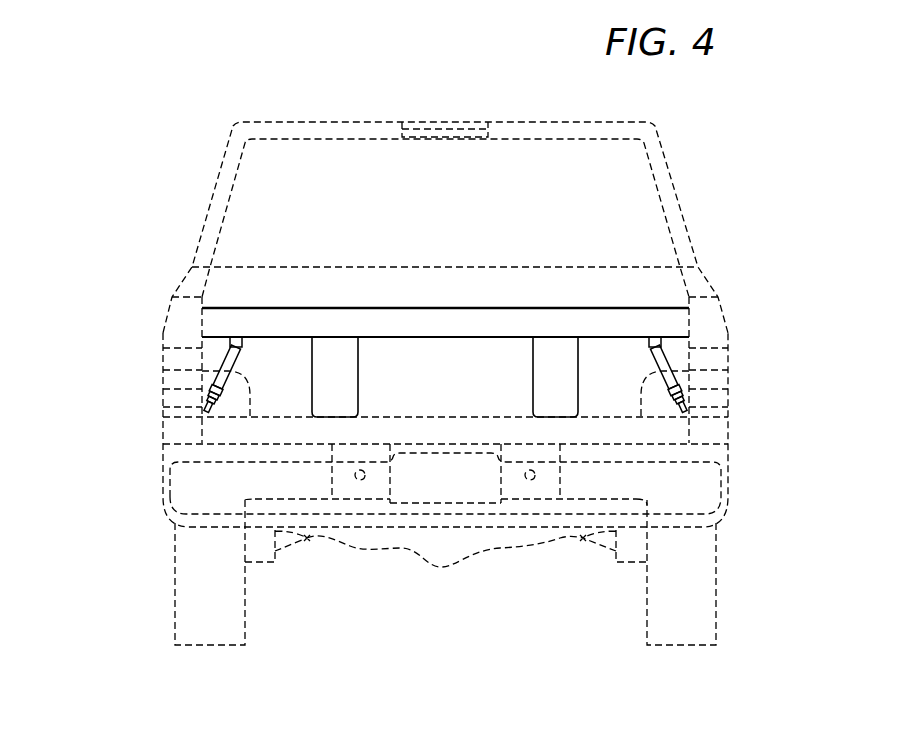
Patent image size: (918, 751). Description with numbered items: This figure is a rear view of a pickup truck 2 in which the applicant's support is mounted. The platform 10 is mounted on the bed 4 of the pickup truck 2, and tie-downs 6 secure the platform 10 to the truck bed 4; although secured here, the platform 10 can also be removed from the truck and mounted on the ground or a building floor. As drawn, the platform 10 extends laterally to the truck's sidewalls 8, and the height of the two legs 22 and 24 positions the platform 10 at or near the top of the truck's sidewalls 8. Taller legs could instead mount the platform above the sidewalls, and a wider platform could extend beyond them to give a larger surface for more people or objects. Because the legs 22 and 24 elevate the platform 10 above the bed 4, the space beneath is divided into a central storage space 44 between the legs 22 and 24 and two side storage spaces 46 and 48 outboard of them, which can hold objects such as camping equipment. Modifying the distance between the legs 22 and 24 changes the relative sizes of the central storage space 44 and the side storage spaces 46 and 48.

The pickup truck 2 is at (667, 143).
The bed 4 is at (445, 418).
The tie-downs 6 is at (675, 381).
The sidewalls 8 is at (228, 366).
The platform 10 is at (663, 327).
The leg 22 is at (340, 348).
The leg 24 is at (557, 353).
The central storage space 44 is at (400, 380).
The side storage space 46 is at (278, 353).
The side storage space 48 is at (627, 370).